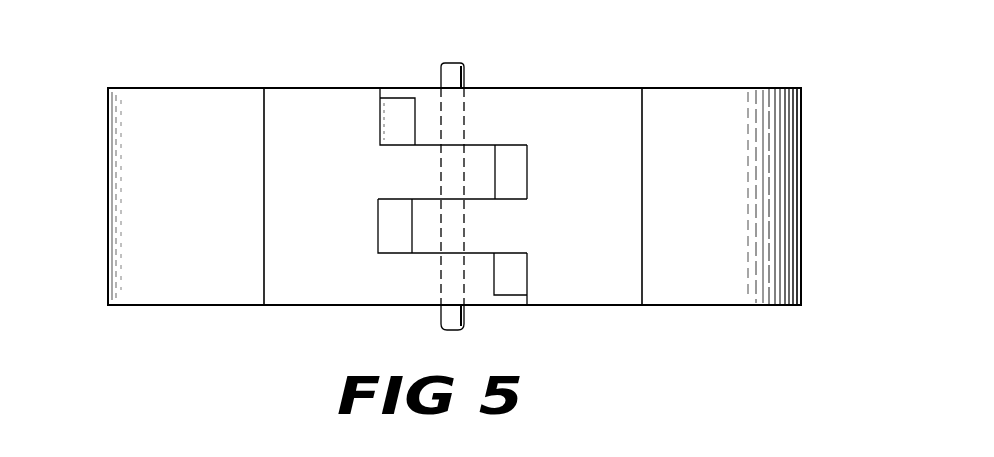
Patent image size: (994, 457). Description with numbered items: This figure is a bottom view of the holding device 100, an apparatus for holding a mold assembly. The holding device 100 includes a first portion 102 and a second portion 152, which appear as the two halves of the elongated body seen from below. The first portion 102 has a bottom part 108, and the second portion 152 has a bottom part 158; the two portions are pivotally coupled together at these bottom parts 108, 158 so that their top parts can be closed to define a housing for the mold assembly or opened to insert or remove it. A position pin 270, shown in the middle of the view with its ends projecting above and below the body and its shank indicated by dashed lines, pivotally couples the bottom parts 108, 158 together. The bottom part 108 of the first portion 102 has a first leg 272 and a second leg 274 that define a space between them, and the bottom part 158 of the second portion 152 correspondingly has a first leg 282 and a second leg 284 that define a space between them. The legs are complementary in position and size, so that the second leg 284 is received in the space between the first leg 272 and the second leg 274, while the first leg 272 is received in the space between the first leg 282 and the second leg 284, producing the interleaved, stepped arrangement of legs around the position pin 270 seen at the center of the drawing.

The holding device 100 is at (228, 52).
The first portion 102 is at (138, 86).
The bottom part 108 is at (170, 287).
The second portion 152 is at (810, 97).
The bottom part 158 is at (727, 290).
The position pin 270 is at (458, 62).
The first leg 272 is at (476, 152).
The second leg 274 is at (480, 288).
The first leg 282 is at (425, 105).
The second leg 284 is at (475, 225).